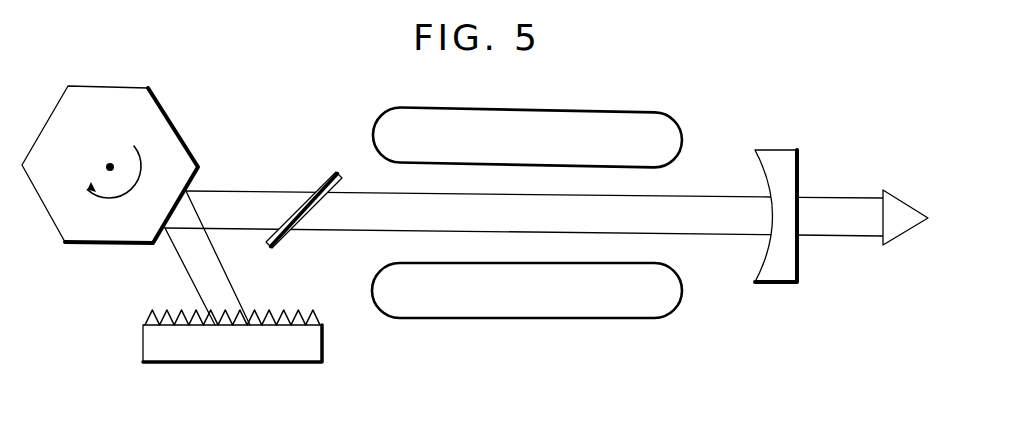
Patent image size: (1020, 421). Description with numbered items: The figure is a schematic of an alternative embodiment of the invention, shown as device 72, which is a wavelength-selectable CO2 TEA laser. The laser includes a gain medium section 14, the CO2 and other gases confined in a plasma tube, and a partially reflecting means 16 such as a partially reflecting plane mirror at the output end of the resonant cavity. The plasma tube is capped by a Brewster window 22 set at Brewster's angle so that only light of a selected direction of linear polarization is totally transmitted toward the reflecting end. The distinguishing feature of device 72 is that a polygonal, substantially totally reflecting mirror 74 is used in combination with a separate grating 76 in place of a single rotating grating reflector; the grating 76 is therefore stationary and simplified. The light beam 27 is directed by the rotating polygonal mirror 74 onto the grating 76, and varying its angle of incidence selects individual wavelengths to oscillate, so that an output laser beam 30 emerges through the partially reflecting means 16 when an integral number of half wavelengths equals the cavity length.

The gain medium section 14 is at (610, 110).
The partially reflecting means 16 is at (779, 150).
The Brewster window 22 is at (341, 172).
The light beam 27 is at (255, 190).
The output laser beam 30 is at (832, 197).
The device 72 is at (97, 352).
The polygonal substantially totally reflecting mirror 74 is at (178, 127).
The grating 76 is at (323, 355).